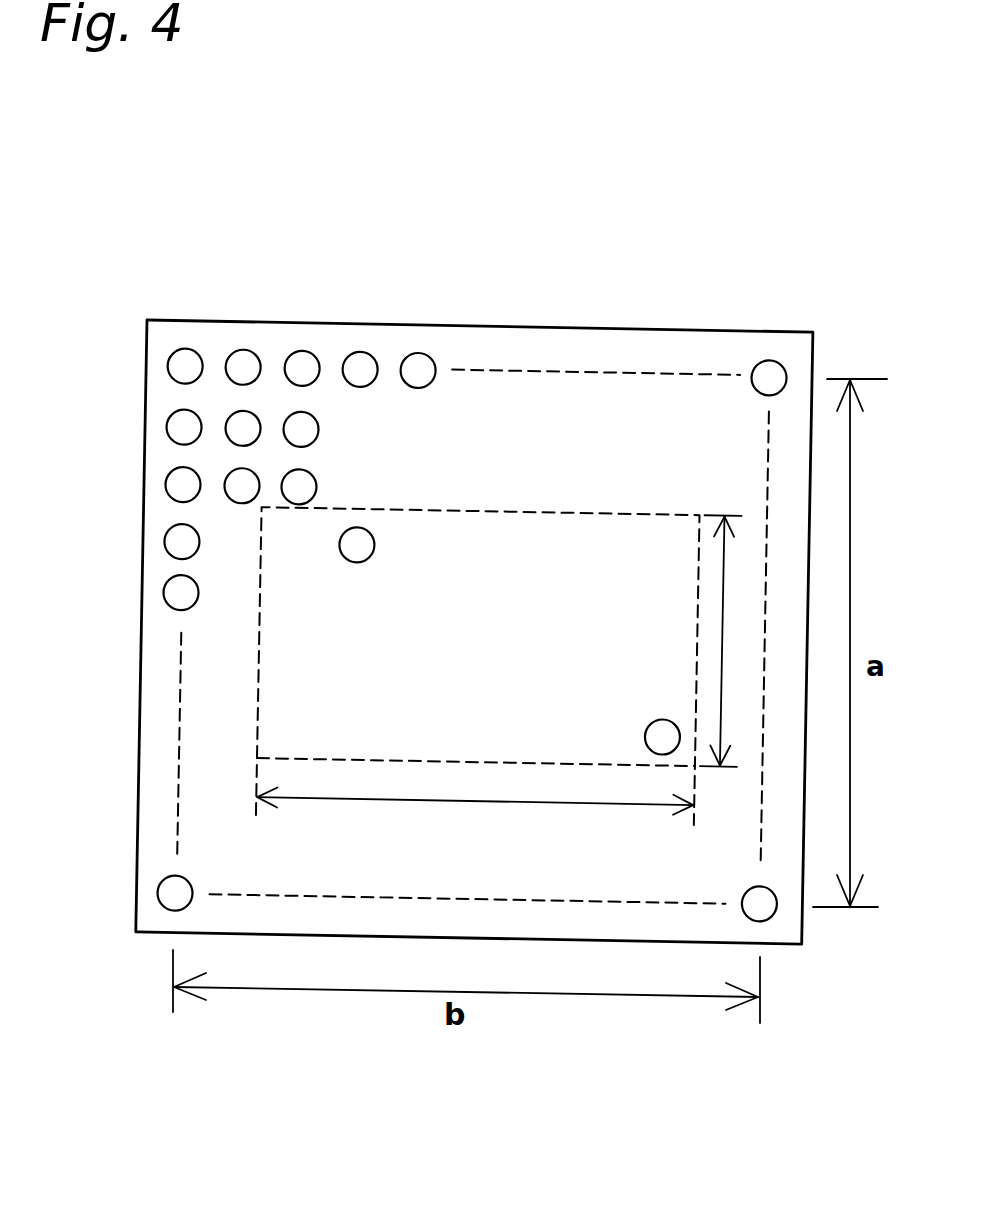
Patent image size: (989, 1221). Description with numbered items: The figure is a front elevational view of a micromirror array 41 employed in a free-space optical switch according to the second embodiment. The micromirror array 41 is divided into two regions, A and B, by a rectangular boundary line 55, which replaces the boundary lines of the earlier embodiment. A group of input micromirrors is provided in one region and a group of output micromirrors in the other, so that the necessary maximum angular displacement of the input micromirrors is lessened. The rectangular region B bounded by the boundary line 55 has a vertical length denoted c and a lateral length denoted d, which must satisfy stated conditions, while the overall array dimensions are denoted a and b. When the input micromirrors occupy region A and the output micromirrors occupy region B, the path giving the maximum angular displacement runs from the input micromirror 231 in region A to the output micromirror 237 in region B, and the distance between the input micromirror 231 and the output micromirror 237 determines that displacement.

The micromirror array 41 is at (658, 331).
The input micromirror 231 is at (167, 357).
The rectangular boundary line 55 is at (258, 652).
The output micromirror 237 is at (645, 733).